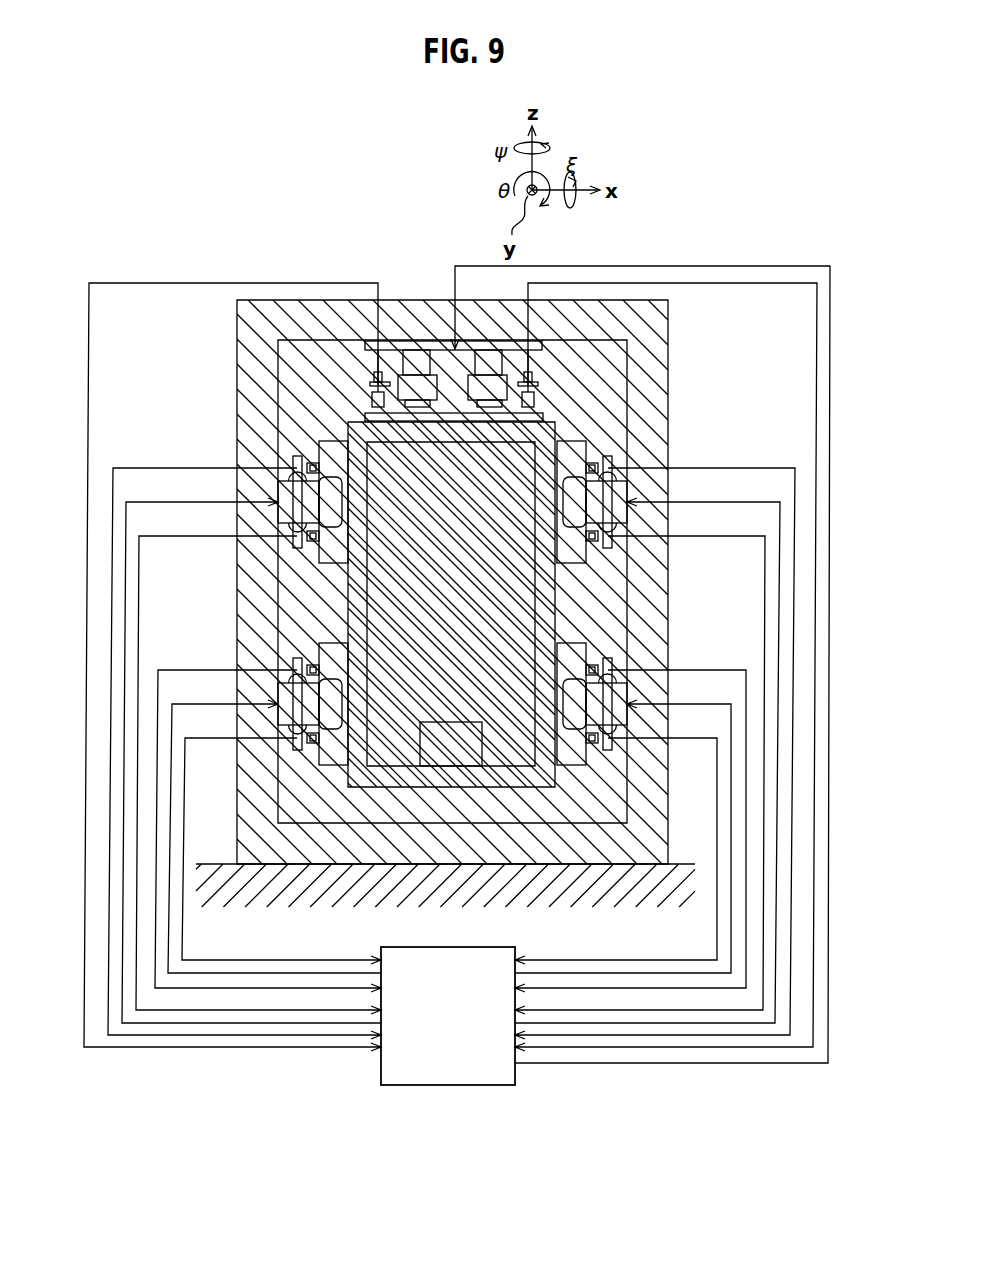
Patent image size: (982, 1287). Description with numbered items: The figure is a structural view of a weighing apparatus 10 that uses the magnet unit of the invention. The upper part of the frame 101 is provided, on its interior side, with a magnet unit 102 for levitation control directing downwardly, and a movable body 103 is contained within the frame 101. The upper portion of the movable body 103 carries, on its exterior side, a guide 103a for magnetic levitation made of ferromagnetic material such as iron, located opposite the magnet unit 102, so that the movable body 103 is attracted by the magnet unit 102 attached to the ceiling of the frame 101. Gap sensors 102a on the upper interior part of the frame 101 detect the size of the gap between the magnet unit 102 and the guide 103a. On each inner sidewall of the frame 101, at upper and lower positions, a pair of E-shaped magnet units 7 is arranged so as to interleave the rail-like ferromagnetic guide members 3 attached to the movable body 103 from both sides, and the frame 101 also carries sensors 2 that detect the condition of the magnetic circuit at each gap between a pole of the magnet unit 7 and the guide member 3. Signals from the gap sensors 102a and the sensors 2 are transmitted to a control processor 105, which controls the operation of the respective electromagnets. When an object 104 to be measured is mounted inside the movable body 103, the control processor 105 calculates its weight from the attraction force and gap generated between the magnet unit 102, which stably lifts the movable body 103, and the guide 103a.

The frame 101 is at (238, 322).
The magnet unit 102 is at (443, 352).
The gap sensor 102a is at (372, 395).
The movable body 103 is at (350, 600).
The guide for magnetic levitation 103a is at (547, 416).
The object to be measured 104 is at (448, 722).
The control processor 105 is at (451, 1098).
The sensor 2 is at (293, 460).
The guide member 3 is at (333, 447).
The E-shaped magnet unit 7 is at (310, 500).
The weighing apparatus 10 is at (232, 603).